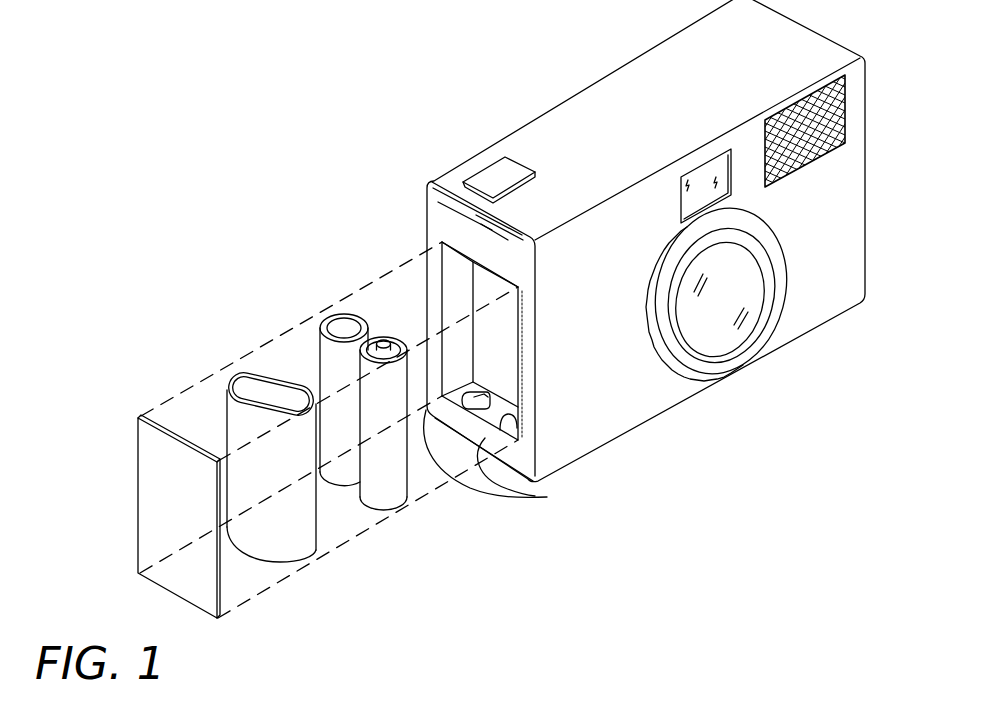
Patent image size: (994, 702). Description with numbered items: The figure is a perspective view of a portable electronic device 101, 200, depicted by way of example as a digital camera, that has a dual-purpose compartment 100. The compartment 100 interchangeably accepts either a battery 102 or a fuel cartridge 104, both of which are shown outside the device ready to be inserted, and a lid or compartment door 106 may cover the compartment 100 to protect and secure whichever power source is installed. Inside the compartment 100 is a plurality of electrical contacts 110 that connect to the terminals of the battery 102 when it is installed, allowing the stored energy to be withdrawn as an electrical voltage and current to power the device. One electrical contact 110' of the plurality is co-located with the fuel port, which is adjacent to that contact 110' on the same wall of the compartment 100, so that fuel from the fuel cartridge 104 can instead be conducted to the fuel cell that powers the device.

The portable electronic device 101 is at (662, 72).
The portable electronic device 200 is at (646, 241).
The dual-purpose compartment 100 is at (450, 299).
The battery 102 is at (385, 344).
The fuel cartridge 104 is at (246, 378).
The compartment door 106 is at (142, 417).
The electrical contacts 110 is at (552, 461).
The electrical contact 110' is at (506, 467).